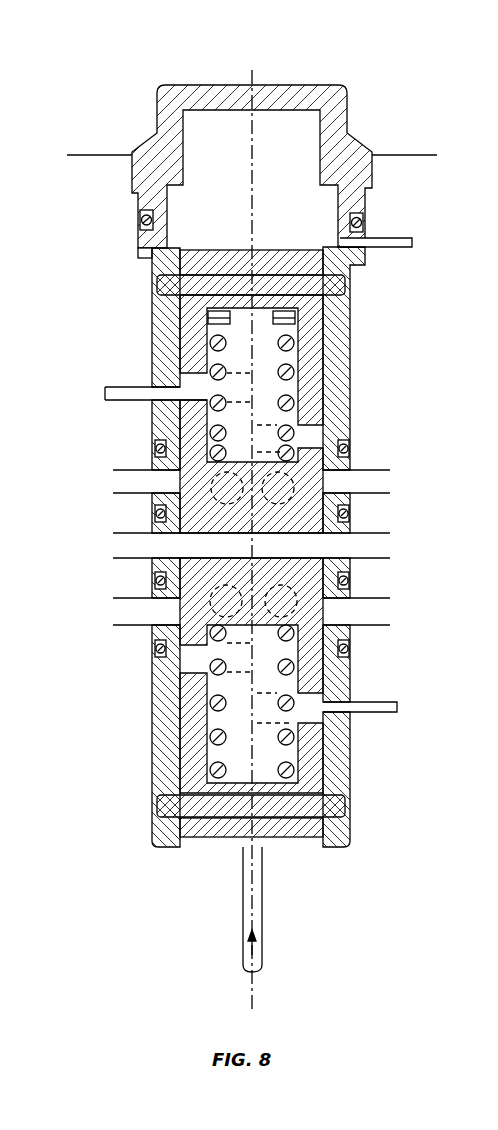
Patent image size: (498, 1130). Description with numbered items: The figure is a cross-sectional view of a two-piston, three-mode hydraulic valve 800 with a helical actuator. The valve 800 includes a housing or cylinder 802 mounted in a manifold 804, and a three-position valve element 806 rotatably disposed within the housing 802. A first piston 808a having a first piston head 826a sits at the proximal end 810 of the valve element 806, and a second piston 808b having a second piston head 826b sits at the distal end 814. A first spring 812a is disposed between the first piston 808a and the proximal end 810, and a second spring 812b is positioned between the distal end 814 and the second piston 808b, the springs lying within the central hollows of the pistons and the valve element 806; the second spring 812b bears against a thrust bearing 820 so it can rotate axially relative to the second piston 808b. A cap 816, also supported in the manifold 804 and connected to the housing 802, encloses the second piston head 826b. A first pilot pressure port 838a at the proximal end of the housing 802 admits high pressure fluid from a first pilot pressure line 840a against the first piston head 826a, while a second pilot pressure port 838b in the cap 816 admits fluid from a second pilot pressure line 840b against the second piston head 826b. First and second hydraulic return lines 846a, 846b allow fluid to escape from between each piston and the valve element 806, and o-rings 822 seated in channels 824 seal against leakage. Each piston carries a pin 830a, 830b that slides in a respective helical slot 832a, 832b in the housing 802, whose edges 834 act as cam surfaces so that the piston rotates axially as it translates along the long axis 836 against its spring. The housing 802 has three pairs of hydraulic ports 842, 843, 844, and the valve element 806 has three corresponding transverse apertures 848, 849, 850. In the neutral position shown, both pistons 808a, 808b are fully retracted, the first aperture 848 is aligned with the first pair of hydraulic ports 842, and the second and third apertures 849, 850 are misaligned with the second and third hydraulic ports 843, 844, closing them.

The valve 800 is at (148, 66).
The housing 802 is at (166, 337).
The manifold 804 is at (90, 160).
The valve element 806 is at (228, 528).
The first piston 808a is at (195, 776).
The second piston 808b is at (313, 330).
The proximal end 810 is at (268, 628).
The first spring 812a is at (210, 704).
The second spring 812b is at (291, 404).
The distal end 814 is at (282, 470).
The cap 816 is at (333, 116).
The thrust bearing 820 is at (282, 311).
The o-rings 822 is at (358, 220).
The channels 824 is at (153, 456).
The first piston head 826a is at (291, 847).
The second piston head 826b is at (295, 245).
The pin 830a is at (175, 807).
The pin 830b is at (340, 284).
The helical slot 832a is at (358, 806).
The helical slot 832b is at (147, 285).
The edges 834 is at (157, 273).
The long axis 836 is at (253, 74).
The first pilot pressure port 838a is at (250, 847).
The second pilot pressure port 838b is at (356, 246).
The first pilot pressure line 840a is at (263, 933).
The second pilot pressure line 840b is at (388, 246).
The first pair of hydraulic ports 842 is at (162, 548).
The second pair of hydraulic ports 843 is at (162, 615).
The third pair of hydraulic ports 844 is at (162, 483).
The first hydraulic return line 846a is at (372, 707).
The second hydraulic return line 846b is at (133, 392).
The first aperture 848 is at (306, 555).
The second aperture 849 is at (265, 585).
The third aperture 850 is at (270, 521).